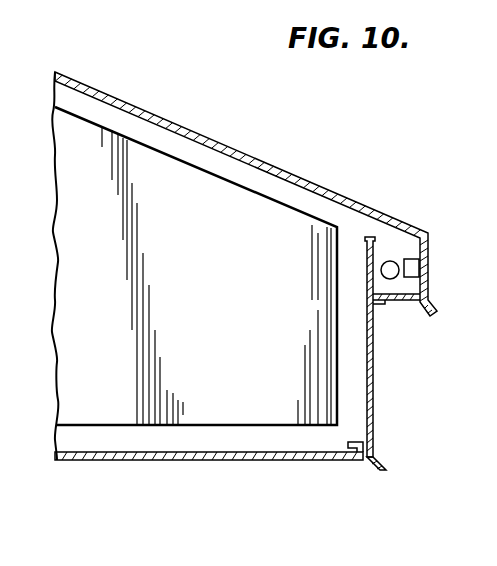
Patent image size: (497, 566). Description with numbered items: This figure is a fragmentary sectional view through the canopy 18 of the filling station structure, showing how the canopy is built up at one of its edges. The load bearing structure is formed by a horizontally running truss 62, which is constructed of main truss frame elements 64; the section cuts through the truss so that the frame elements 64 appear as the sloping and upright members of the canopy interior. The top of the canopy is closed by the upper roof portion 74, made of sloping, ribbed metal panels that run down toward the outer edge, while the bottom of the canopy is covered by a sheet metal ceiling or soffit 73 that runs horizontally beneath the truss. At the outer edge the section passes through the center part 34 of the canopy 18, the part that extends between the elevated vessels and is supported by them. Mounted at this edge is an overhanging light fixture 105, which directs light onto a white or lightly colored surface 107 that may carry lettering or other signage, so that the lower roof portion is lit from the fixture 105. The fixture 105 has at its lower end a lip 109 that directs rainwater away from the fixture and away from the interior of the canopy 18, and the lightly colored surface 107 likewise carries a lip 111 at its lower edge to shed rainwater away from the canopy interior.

The canopy 18 is at (149, 107).
The upper roof portion 74 is at (234, 144).
The truss 62 is at (278, 188).
The main truss frame element 64 is at (295, 210).
The overhanging light fixture 105 is at (401, 247).
The lip 109 is at (424, 324).
The lightly colored surface 107 is at (380, 382).
The center part 34 is at (380, 408).
The lip 111 is at (376, 480).
The soffit 73 is at (112, 463).